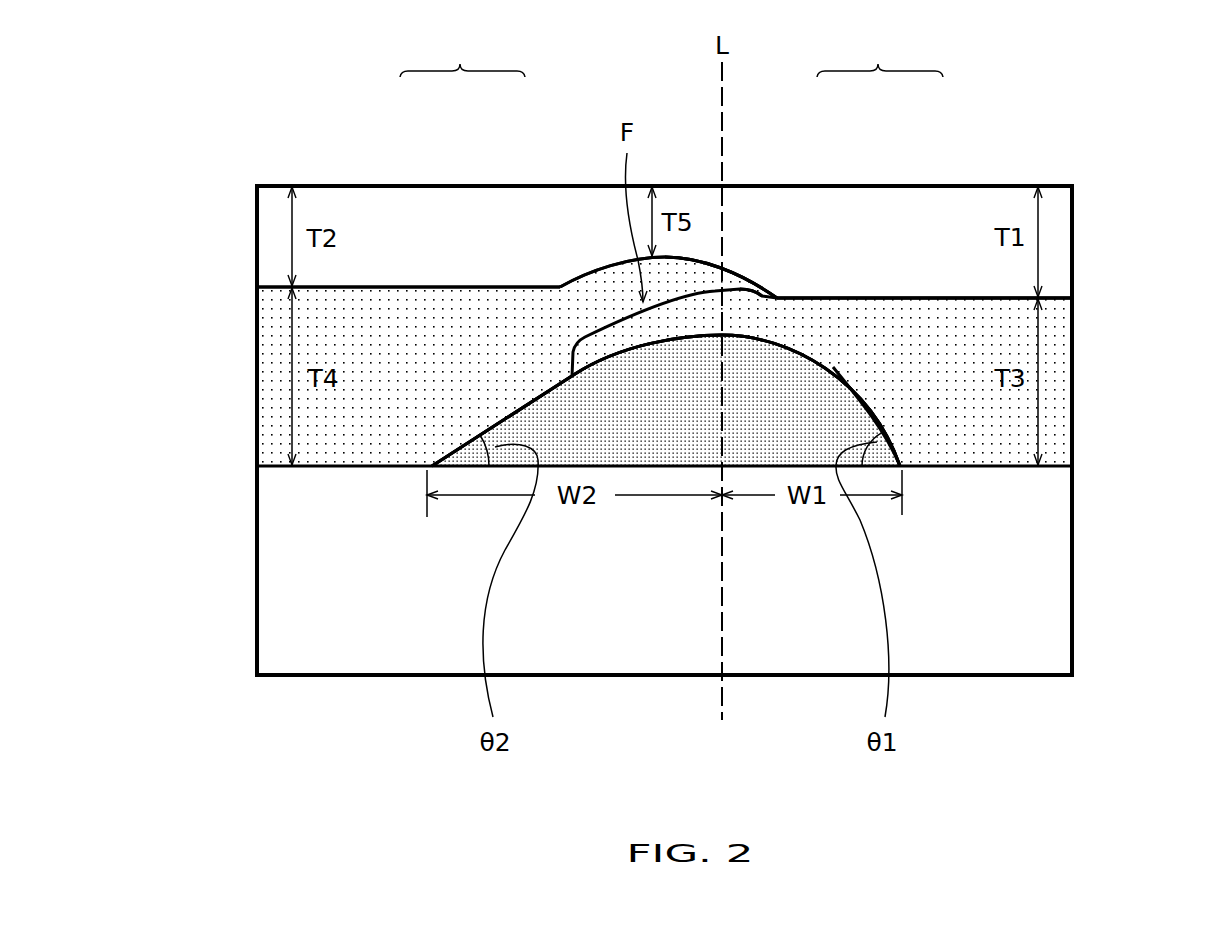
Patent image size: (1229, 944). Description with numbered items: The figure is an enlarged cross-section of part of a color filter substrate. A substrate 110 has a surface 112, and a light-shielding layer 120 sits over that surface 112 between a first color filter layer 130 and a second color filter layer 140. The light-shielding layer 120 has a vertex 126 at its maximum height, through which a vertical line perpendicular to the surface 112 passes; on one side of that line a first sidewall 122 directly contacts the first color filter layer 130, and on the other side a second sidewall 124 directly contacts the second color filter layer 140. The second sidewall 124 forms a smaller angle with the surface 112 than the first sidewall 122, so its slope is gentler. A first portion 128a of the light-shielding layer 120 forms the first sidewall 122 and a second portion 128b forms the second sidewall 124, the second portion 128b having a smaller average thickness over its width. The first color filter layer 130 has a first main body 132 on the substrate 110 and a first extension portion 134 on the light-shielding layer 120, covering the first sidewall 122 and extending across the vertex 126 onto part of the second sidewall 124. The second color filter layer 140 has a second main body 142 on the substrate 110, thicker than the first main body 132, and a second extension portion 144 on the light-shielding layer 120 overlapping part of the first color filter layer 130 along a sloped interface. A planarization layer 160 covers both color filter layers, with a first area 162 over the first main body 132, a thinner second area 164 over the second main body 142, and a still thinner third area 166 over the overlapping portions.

The substrate 110 is at (1038, 582).
The surface 112 is at (1062, 461).
The light-shielding layer 120 is at (622, 351).
The first sidewall 122 is at (862, 396).
The second sidewall 124 is at (497, 419).
The vertex 126 is at (724, 333).
The first portion 128a is at (780, 427).
The second portion 128b is at (658, 428).
The first color filter layer 130 is at (924, 164).
The first main body 132 is at (922, 340).
The first extension portion 134 is at (757, 317).
The second color filter layer 140 is at (588, 164).
The second main body 142 is at (452, 330).
The second extension portion 144 is at (607, 297).
The planarization layer 160 is at (246, 223).
The first area 162 is at (985, 213).
The second area 164 is at (357, 215).
The third area 166 is at (707, 227).